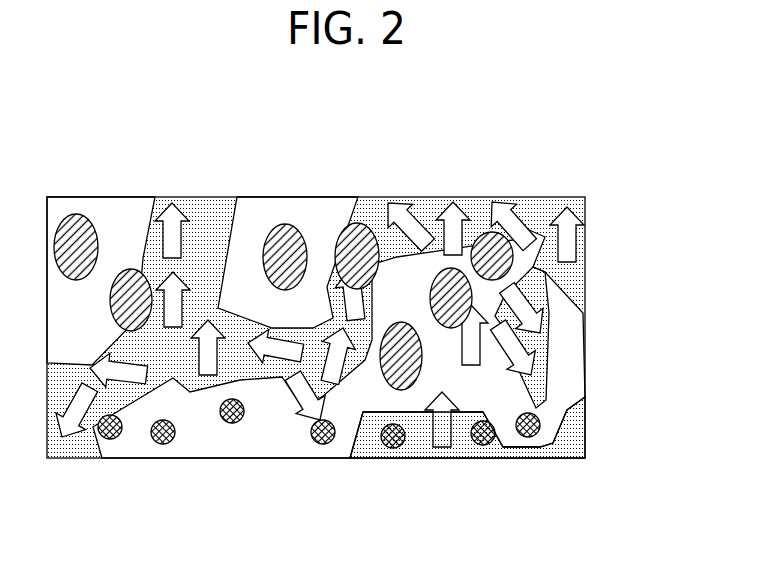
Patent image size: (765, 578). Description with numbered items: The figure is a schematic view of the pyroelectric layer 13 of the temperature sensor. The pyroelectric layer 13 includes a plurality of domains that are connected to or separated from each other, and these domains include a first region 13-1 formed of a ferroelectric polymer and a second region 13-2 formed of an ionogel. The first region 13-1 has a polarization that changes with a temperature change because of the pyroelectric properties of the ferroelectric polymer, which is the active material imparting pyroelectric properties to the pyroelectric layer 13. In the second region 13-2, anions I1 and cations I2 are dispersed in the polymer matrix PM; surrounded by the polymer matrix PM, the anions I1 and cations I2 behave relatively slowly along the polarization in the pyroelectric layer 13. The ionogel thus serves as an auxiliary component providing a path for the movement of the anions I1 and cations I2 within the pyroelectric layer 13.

The pyroelectric layer 13 is at (555, 178).
The first region 13-1 is at (538, 367).
The second region 13-2 is at (448, 439).
The anions I1 is at (405, 382).
The cations I2 is at (321, 444).
The polymer matrix PM is at (378, 398).